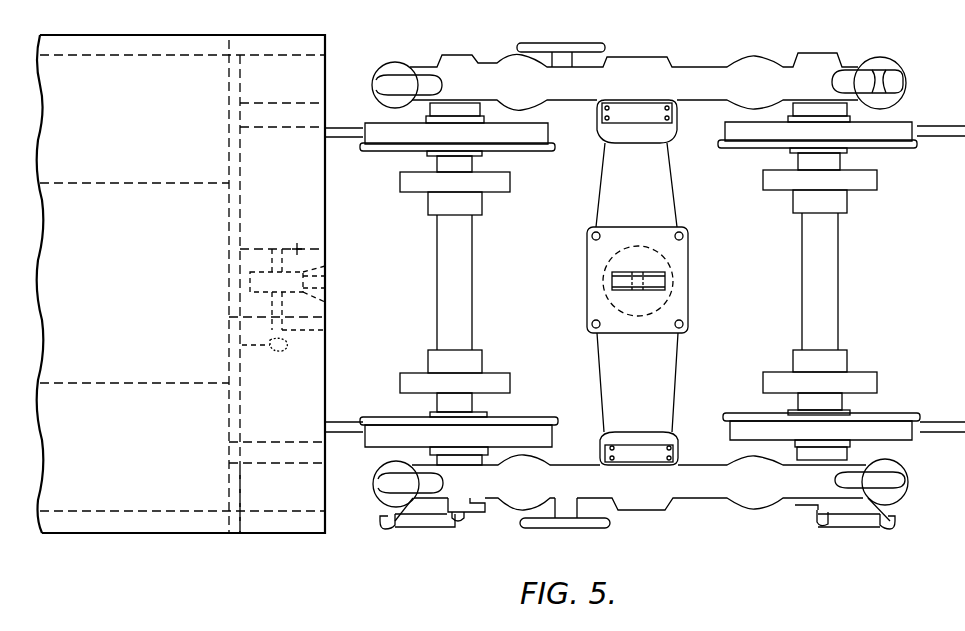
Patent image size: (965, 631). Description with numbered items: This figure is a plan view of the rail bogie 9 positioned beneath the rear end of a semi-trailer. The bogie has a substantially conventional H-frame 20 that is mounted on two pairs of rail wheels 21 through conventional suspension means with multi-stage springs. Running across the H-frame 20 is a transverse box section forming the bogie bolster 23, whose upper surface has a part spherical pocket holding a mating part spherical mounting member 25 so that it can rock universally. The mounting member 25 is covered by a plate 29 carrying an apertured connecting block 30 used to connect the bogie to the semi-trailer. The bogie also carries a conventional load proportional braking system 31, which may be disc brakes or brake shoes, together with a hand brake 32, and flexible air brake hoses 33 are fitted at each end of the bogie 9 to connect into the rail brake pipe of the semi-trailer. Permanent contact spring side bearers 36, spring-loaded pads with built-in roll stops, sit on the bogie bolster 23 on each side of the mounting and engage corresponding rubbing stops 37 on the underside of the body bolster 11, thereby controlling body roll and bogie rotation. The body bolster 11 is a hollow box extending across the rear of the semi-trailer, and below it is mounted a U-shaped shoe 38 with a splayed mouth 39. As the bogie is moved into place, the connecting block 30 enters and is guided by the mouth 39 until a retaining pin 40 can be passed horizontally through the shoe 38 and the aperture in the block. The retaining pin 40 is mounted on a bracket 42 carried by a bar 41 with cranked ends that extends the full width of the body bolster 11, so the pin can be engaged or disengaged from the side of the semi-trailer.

The rail bogie 9 is at (720, 65).
The body bolster 11 is at (304, 531).
The H-frame 20 is at (688, 78).
The rail wheels 21 is at (383, 151).
The bogie bolster 23 is at (665, 205).
The mounting member 25 is at (668, 265).
The plate 29 is at (592, 250).
The connecting block 30 is at (612, 280).
The braking system 31 is at (497, 503).
The hand brake 32 is at (600, 528).
The flexible air brake hoses 33 is at (425, 522).
The spring side bearers 36 is at (627, 115).
The rubbing stops 37 is at (276, 115).
The U-shaped shoe 38 is at (298, 246).
The splayed mouth 39 is at (314, 276).
The retaining pin 40 is at (325, 330).
The bar 41 is at (242, 491).
The bracket 42 is at (258, 355).